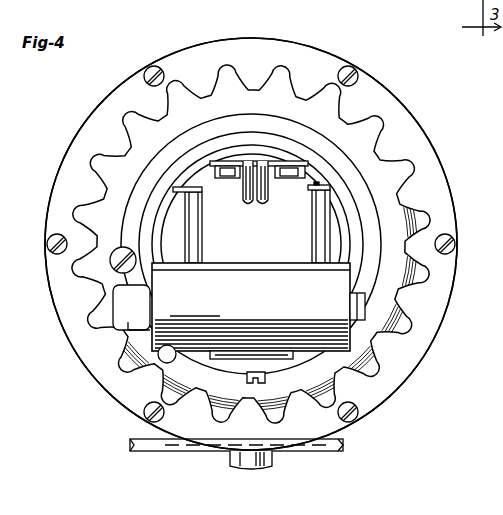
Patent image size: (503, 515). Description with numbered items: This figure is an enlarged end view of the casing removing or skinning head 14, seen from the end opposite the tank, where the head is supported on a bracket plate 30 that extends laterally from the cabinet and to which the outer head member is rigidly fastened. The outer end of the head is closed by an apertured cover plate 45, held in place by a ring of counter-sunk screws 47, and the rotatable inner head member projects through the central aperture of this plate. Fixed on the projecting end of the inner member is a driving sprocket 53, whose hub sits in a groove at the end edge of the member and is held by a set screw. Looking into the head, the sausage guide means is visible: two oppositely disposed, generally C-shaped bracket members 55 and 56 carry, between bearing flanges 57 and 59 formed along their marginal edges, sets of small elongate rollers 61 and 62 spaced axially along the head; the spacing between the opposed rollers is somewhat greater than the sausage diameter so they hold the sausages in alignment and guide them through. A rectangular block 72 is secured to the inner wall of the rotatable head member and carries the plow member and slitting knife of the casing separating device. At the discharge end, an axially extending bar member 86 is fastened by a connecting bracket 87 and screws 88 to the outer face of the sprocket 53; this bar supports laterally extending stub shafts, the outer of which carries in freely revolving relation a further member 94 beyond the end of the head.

The skinning head 14 is at (288, 44).
The bracket plate 30 is at (310, 452).
The cover plate 45 is at (404, 110).
The counter-sunk screws 47 is at (360, 76).
The driving sprocket 53 is at (385, 182).
The bracket member 55 is at (160, 227).
The bracket member 56 is at (348, 231).
The bearing flange 57 is at (200, 187).
The bearing flange 59 is at (316, 187).
The rollers 61 is at (203, 222).
The rollers 62 is at (311, 222).
The rectangular block 72 is at (254, 160).
The bar member 86 is at (128, 322).
The connecting bracket 87 is at (108, 284).
The screws 88 is at (110, 263).
The coil block 94 is at (352, 340).